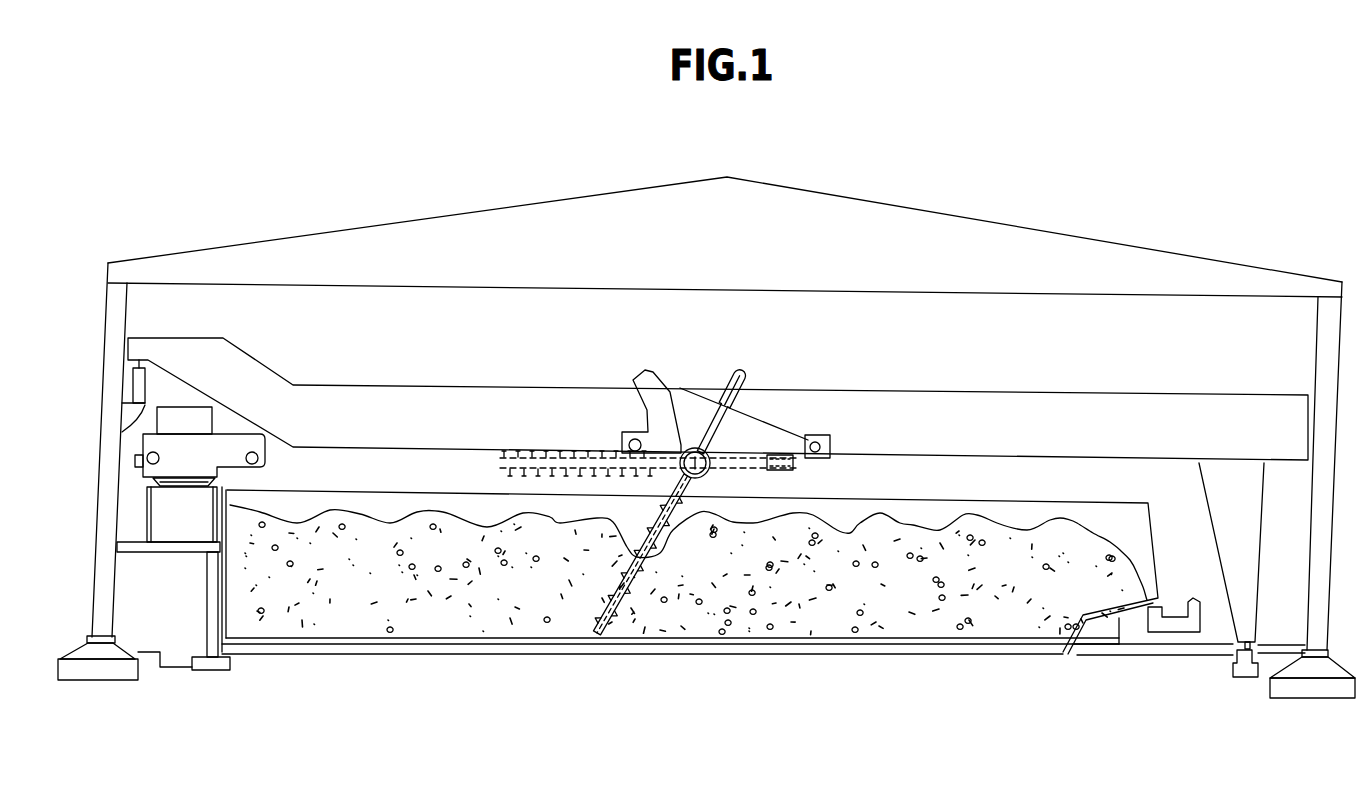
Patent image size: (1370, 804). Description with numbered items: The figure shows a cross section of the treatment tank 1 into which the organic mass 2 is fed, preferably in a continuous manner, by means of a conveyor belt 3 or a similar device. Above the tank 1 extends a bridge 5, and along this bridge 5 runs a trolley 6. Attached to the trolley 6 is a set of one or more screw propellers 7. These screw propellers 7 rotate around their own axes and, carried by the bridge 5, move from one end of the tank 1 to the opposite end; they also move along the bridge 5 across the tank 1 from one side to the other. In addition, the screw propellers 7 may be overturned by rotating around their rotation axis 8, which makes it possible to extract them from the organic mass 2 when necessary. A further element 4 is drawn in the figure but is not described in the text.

The treatment tank 1 is at (717, 650).
The organic mass 2 is at (947, 587).
The conveyor belt 3 is at (177, 458).
The support bracket 4 is at (1183, 624).
The bridge 5 is at (402, 415).
The trolley 6 is at (818, 443).
The screw propellers 7 is at (597, 633).
The rotation axis 8 is at (688, 451).